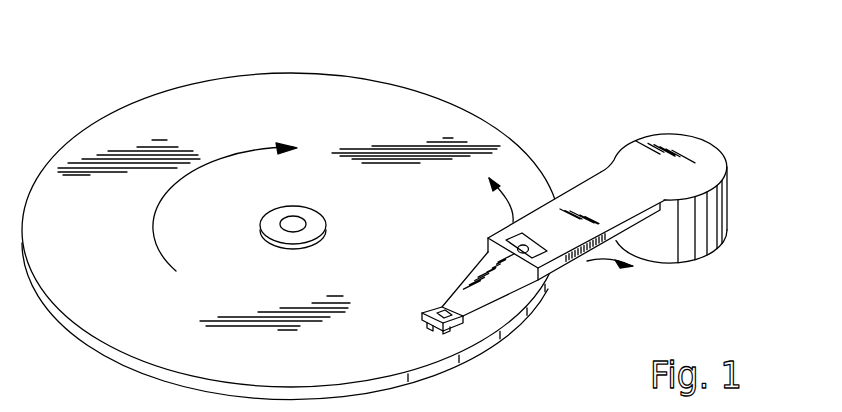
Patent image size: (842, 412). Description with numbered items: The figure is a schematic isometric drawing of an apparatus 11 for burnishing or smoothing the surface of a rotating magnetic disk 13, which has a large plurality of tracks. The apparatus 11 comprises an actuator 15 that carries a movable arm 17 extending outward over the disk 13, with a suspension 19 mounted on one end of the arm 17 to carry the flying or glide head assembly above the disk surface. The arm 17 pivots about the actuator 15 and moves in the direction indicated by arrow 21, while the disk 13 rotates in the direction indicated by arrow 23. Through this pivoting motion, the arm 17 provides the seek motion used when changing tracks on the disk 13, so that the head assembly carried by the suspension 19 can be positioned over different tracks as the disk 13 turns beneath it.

The apparatus 11 is at (407, 208).
The magnetic disk 13 is at (216, 98).
The actuator 15 is at (710, 157).
The movable arm 17 is at (596, 188).
The suspension 19 is at (484, 292).
The arrow 21 is at (500, 193).
The arrow 23 is at (153, 220).